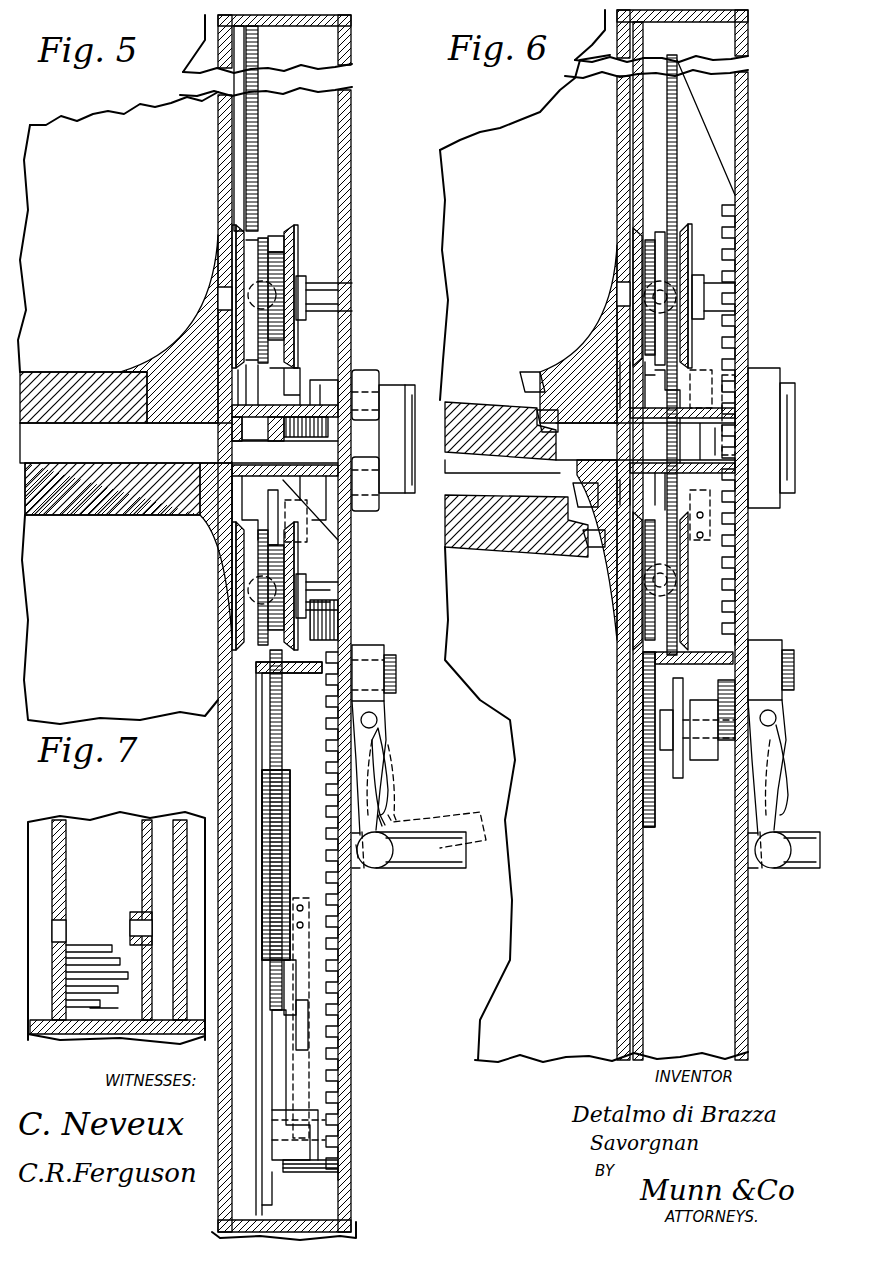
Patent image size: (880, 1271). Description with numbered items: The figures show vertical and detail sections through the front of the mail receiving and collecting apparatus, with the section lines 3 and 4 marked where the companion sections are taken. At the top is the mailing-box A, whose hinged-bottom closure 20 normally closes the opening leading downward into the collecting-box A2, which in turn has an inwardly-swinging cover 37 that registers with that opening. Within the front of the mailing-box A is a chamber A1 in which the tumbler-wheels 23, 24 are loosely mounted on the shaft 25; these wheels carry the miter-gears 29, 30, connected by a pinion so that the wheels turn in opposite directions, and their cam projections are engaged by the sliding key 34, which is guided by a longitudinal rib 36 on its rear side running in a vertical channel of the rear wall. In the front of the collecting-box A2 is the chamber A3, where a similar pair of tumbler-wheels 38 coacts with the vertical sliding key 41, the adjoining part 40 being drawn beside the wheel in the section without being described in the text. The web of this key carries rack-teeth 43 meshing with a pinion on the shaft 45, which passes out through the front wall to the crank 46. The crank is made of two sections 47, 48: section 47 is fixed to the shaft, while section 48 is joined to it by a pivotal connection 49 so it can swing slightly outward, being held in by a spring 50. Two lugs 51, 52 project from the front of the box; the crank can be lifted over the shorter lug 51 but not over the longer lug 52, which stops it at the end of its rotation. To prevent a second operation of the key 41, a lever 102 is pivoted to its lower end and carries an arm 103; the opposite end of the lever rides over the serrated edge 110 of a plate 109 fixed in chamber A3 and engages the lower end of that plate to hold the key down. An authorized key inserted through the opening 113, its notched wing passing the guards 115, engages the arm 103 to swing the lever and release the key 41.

In FIG. 5, the section line 3 is at (325, 130).
In FIG. 6, the section line 4 is at (704, 22).
In FIG. 5, the hinged-bottom closure 20 is at (90, 380).
In FIG. 6, the hinged-bottom closure 20 is at (470, 408).
In FIG. 5, the tumbler-wheel 23 is at (260, 240).
In FIG. 5, the tumbler-wheel 24 is at (283, 255).
In FIG. 6, the tumbler-wheel 24 is at (690, 250).
In FIG. 5, the shaft 25 is at (330, 297).
In FIG. 5, the miter-gear 29 is at (232, 250).
In FIG. 6, the miter-gear 29 is at (633, 244).
In FIG. 5, the miter-gear 30 is at (290, 245).
In FIG. 6, the miter-gear 30 is at (684, 232).
In FIG. 5, the sliding key 34 is at (256, 172).
In FIG. 6, the sliding key 34 is at (642, 748).
In FIG. 5, the longitudinal rib 36 is at (238, 170).
In FIG. 5, the inwardly-swinging cover 37 is at (96, 516).
In FIG. 6, the inwardly-swinging cover 37 is at (528, 550).
In FIG. 5, the tumbler-wheel 38 is at (236, 624).
In FIG. 5, the bevel gear flange 40 is at (236, 648).
In FIG. 5, the vertical sliding key 41 is at (284, 730).
In FIG. 6, the vertical sliding key 41 is at (677, 194).
In FIG. 5, the rack-teeth 43 is at (334, 934).
In FIG. 6, the rack-teeth 43 is at (735, 568).
In FIG. 5, the shaft 45 is at (395, 670).
In FIG. 5, the crank 46 is at (388, 712).
In FIG. 5, the crank section 47 is at (363, 665).
In FIG. 6, the crank section 47 is at (786, 712).
In FIG. 5, the crank section 48 is at (390, 760).
In FIG. 5, the pivotal connection 49 is at (378, 725).
In FIG. 5, the spring 50 is at (392, 790).
In FIG. 5, the lug 51 is at (362, 868).
In FIG. 6, the lug 51 is at (760, 868).
In FIG. 5, the lug 52 is at (378, 866).
In FIG. 6, the lug 52 is at (778, 866).
In FIG. 5, the lever 102 is at (272, 1160).
In FIG. 6, the lever 102 is at (686, 755).
In FIG. 5, the arm 103 is at (338, 1168).
In FIG. 5, the plate 109 is at (290, 855).
In FIG. 5, the serrated edge 110 is at (290, 824).
In FIG. 7, the opening 113 is at (68, 940).
In FIG. 7, the guards 115 is at (102, 996).
In FIG. 5, the mailing-box A is at (125, 257).
In FIG. 6, the mailing-box A is at (535, 239).
In FIG. 5, the chamber A1 is at (285, 126).
In FIG. 5, the collecting-box A2 is at (120, 619).
In FIG. 6, the collecting-box A2 is at (504, 803).
In FIG. 5, the chamber A3 is at (240, 686).
In FIG. 6, the chamber A3 is at (648, 860).